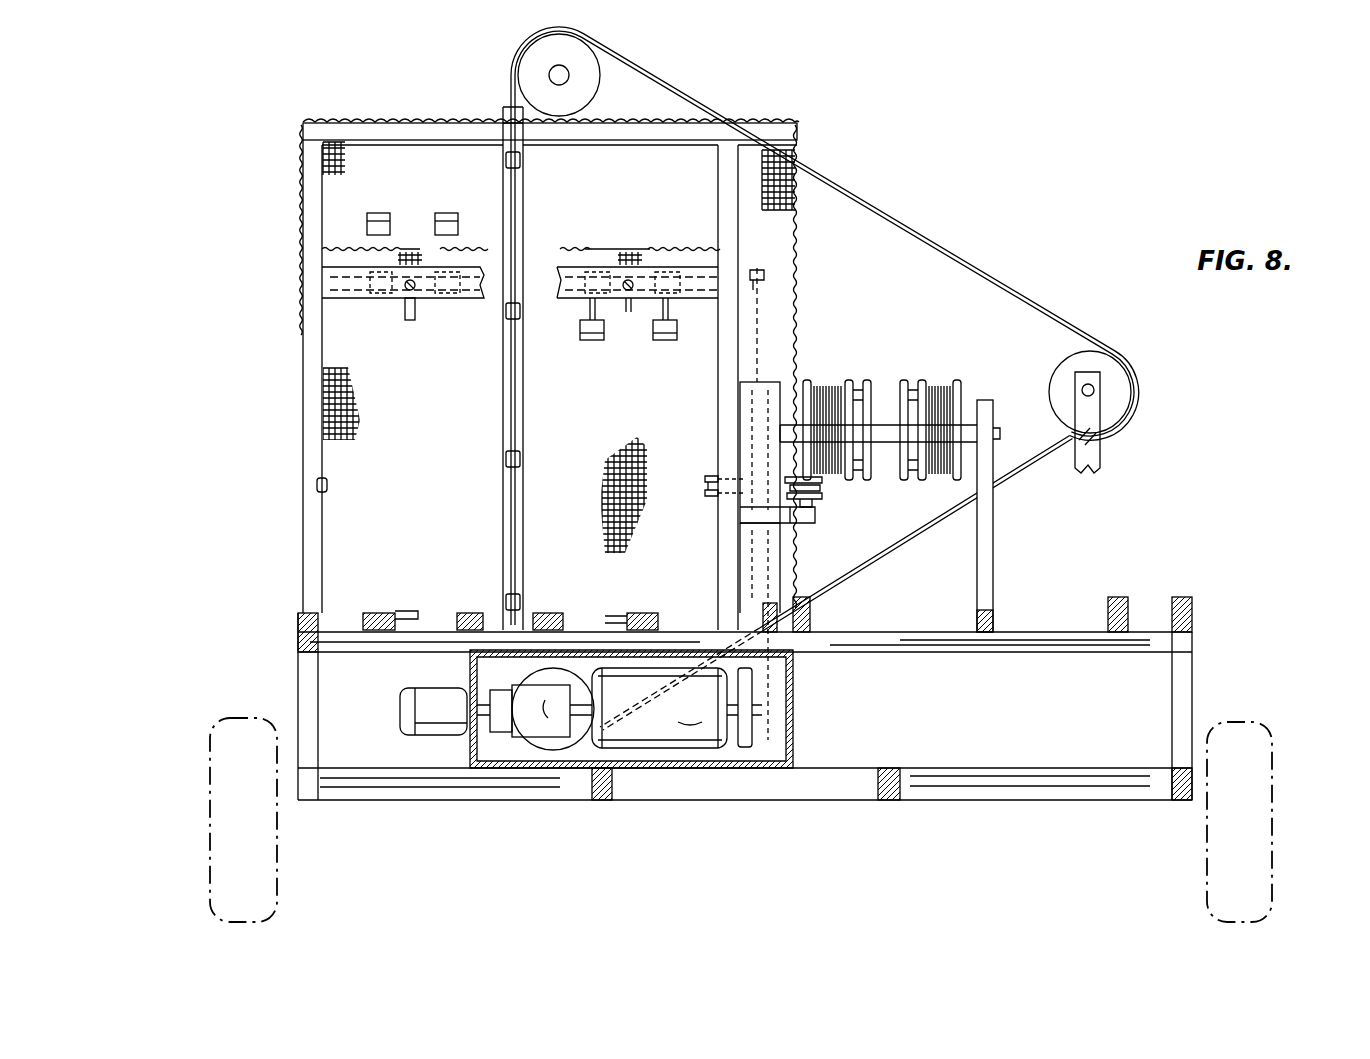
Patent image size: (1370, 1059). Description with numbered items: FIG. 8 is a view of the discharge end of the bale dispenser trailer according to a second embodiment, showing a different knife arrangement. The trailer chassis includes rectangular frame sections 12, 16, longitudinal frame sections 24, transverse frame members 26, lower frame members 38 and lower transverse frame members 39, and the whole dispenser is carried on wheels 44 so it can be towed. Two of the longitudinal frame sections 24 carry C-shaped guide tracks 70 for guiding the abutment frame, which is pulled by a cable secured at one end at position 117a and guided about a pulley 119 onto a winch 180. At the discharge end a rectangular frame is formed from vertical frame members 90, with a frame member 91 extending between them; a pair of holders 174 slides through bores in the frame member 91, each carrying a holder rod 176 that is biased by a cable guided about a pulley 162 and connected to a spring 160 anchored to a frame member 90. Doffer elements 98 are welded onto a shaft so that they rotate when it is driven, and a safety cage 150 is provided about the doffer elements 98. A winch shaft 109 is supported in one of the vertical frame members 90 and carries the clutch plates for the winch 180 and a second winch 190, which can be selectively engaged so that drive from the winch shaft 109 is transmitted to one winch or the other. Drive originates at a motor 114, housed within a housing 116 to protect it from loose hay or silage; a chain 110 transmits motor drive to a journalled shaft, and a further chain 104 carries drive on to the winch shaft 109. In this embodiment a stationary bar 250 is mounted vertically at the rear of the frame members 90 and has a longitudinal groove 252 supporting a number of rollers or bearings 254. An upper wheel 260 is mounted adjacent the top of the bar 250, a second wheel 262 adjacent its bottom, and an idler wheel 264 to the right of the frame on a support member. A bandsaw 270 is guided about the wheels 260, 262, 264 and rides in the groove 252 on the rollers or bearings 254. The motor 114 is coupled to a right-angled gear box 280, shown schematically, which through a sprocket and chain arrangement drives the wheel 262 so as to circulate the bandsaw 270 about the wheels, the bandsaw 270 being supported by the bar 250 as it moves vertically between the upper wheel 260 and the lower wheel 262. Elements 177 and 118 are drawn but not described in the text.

The rectangular frame section 12 is at (1195, 608).
The rectangular frame section 16 is at (297, 632).
The longitudinal frame sections 24 is at (385, 612).
The transverse frame members 26 is at (938, 640).
The lower frame members 38 is at (836, 790).
The lower transverse frame members 39 is at (888, 790).
The wheels 44 is at (215, 740).
The C-shaped guide tracks 70 is at (410, 612).
The vertical frame members 90 is at (318, 330).
The frame member 91 is at (335, 272).
The doffer elements 98 is at (447, 212).
The chain 104 is at (765, 585).
The winch shaft 109 is at (886, 428).
The chain 110 is at (764, 342).
The motor 114 is at (665, 708).
The housing 116 is at (797, 700).
The cable securing position 117a is at (318, 486).
The coupling flange 118 is at (748, 748).
The pulley 119 is at (708, 478).
The safety cage 150 is at (797, 272).
The spring 160 is at (340, 240).
The pulley 162 is at (628, 250).
The holders 174 is at (407, 291).
The holder rod 176 is at (418, 305).
The fabric edge 177 is at (683, 245).
The winch 180 is at (812, 382).
The second winch 190 is at (923, 385).
The stationary bar 250 is at (505, 382).
The longitudinal groove 252 is at (520, 388).
The rollers or bearings 254 is at (506, 460).
The upper wheel 260 is at (522, 68).
The second wheel 262 is at (553, 750).
The idler wheel 264 is at (1120, 395).
The bandsaw 270 is at (932, 244).
The right-angled gear box 280 is at (455, 720).